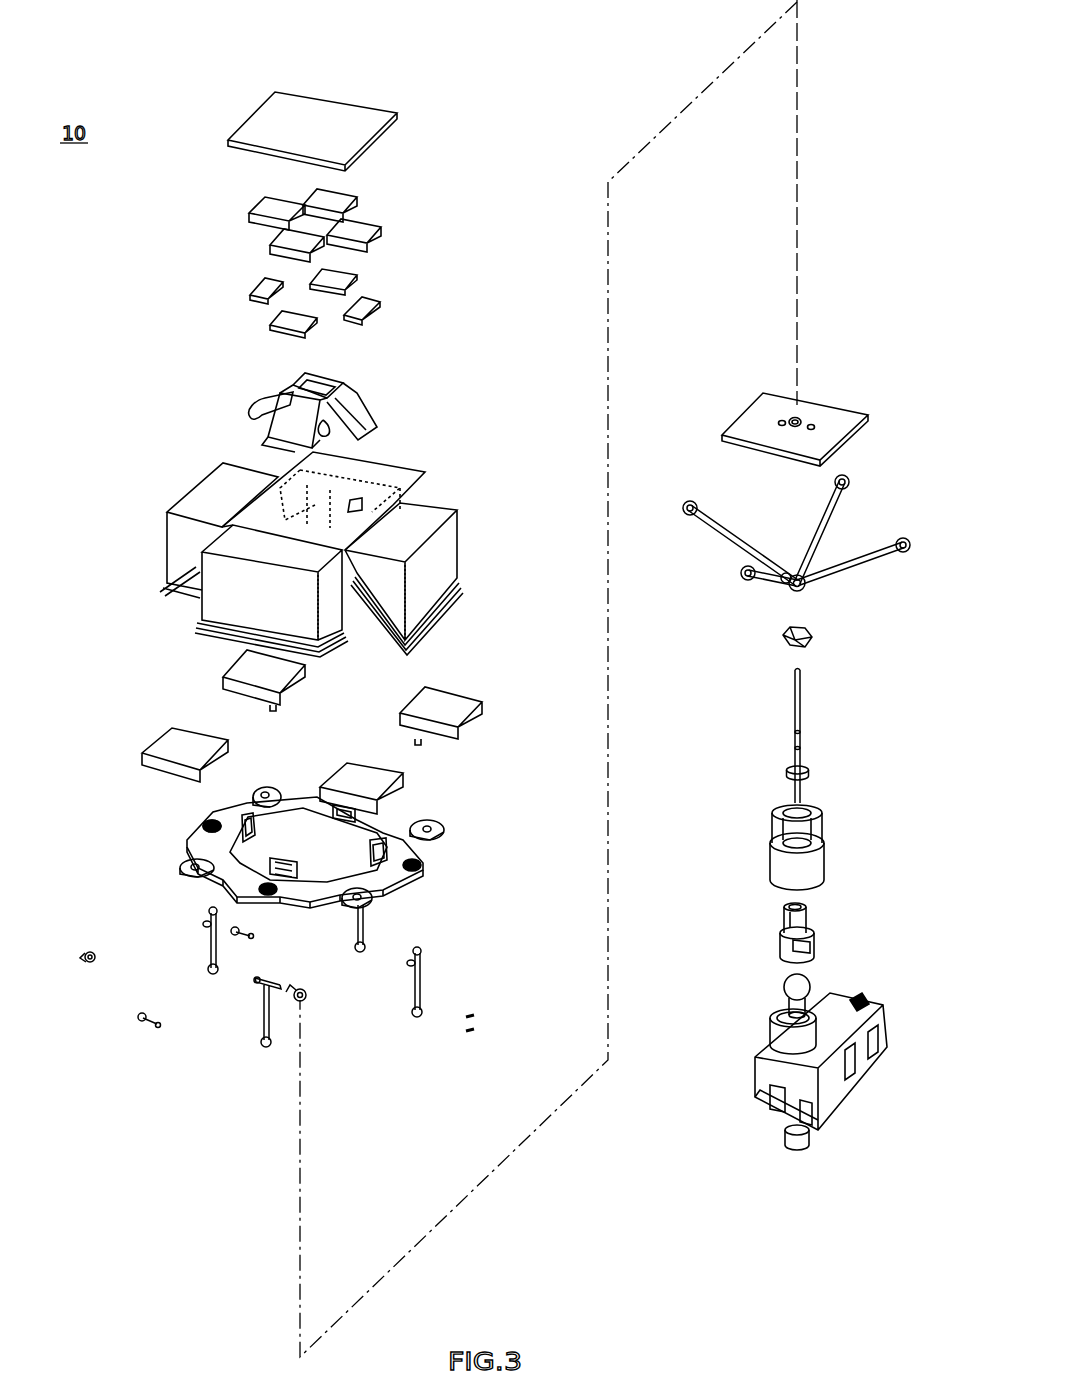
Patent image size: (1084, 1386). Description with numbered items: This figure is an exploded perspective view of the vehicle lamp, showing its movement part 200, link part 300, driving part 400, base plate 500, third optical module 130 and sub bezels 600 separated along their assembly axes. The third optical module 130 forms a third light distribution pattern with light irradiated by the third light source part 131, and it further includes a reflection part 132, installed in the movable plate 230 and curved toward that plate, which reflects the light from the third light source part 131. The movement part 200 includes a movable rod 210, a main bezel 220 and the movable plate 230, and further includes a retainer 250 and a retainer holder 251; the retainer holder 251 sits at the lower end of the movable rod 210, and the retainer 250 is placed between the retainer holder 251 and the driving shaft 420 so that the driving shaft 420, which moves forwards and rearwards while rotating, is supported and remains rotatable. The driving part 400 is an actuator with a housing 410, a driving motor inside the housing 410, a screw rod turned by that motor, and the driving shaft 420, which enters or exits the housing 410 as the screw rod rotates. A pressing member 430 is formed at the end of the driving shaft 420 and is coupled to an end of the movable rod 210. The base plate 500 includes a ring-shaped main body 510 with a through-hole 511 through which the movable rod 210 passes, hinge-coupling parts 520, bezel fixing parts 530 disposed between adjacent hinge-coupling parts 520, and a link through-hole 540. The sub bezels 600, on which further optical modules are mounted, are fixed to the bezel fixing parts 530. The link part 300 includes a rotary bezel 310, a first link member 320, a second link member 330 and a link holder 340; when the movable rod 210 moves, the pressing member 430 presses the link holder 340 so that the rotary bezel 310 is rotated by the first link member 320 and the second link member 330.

The third optical module 130 is at (156, 206).
The third light source part 131 is at (268, 207).
The reflection part 132 is at (297, 410).
The movement part 200 is at (903, 663).
The movable rod 210 is at (802, 700).
The main bezel 220 is at (357, 130).
The movable plate 230 is at (863, 430).
The retainer 250 is at (817, 928).
The retainer holder 251 is at (818, 858).
The link part 300 is at (93, 554).
The rotary bezel 310 is at (208, 596).
The first link member 320 is at (262, 1007).
The second link member 330 is at (713, 527).
The link holder 340 is at (777, 637).
The driving part 400 is at (667, 957).
The housing 410 is at (773, 1073).
The driving shaft 420 is at (788, 1013).
The pressing member 430 is at (790, 978).
The base plate 500 is at (543, 817).
The main body 510 is at (440, 847).
The through-hole 511 is at (393, 817).
The hinge-coupling part 520 is at (410, 863).
The bezel fixing part 530 is at (377, 900).
The link through-hole 540 is at (208, 825).
The sub bezel 600 is at (172, 745).